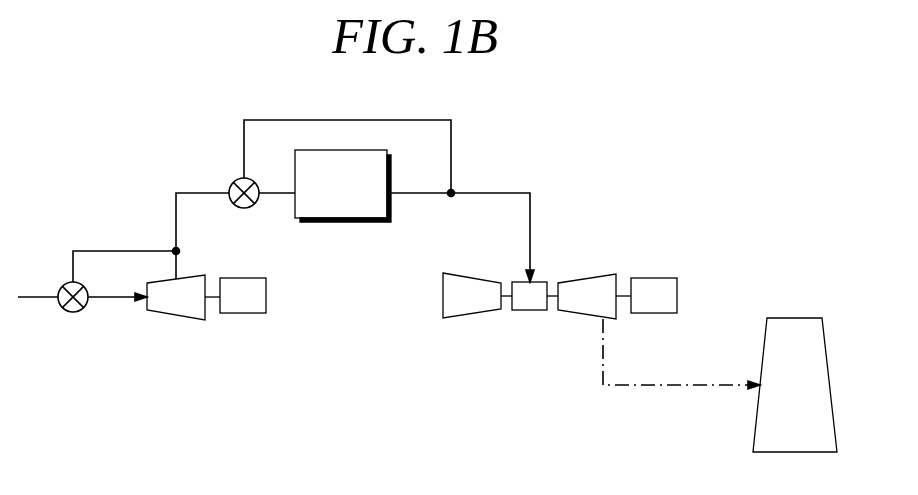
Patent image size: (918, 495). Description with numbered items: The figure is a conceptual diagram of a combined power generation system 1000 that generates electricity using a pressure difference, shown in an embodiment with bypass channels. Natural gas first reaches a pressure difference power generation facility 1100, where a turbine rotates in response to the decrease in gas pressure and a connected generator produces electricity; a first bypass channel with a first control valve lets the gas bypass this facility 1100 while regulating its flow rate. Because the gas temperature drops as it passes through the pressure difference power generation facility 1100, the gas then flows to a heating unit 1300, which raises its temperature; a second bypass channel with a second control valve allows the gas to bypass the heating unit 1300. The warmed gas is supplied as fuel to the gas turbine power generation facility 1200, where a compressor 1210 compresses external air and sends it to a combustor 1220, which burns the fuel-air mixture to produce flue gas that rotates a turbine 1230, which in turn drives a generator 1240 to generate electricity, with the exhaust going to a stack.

The combined power generation system 1000 is at (763, 116).
The pressure difference power generation facility 1100 is at (155, 333).
The gas turbine power generation facility 1200 is at (528, 329).
The compressor 1210 is at (453, 318).
The combustor 1220 is at (530, 310).
The turbine 1230 is at (590, 275).
The generator 1240 is at (654, 270).
The heating unit 1300 is at (342, 150).